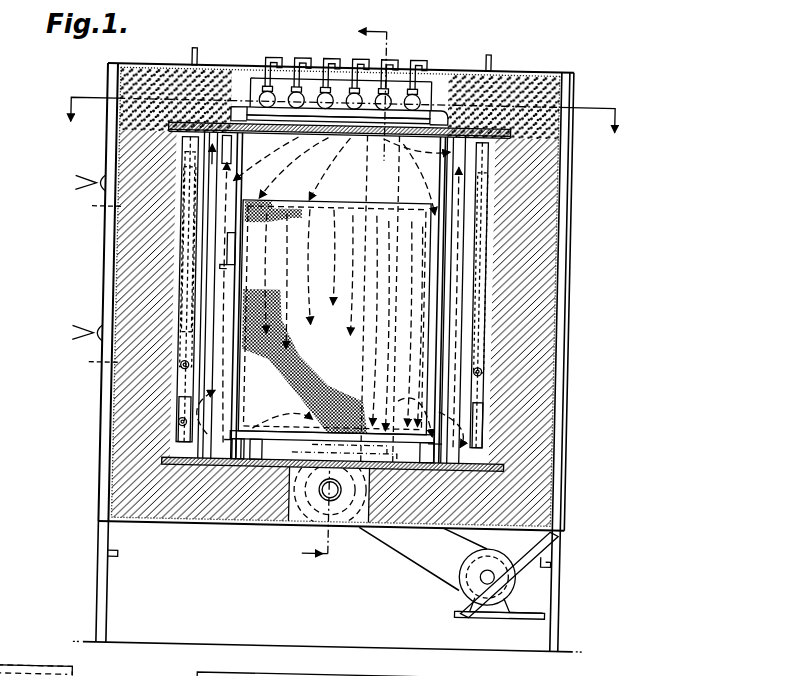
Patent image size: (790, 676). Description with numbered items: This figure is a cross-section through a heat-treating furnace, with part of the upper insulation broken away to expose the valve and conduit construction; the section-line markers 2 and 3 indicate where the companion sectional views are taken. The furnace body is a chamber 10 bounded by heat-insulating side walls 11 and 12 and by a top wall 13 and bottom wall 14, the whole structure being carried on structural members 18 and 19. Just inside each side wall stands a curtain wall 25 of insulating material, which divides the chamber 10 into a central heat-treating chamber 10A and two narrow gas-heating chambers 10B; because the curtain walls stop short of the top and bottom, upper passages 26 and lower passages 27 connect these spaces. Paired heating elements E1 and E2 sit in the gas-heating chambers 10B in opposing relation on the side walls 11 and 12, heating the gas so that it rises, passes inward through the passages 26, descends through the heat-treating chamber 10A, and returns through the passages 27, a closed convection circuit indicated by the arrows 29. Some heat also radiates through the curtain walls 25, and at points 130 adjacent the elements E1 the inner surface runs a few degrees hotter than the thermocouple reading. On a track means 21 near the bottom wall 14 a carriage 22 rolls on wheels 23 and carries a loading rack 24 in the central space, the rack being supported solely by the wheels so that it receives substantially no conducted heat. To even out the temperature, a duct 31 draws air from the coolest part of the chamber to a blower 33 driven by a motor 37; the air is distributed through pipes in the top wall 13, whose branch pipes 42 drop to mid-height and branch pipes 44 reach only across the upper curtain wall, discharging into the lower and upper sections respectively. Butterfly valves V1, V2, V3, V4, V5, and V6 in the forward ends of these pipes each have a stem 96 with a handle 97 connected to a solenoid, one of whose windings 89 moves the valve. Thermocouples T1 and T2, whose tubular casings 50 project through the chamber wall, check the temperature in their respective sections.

The section line 2- 2 is at (344, 300).
The section line 3- 3 is at (339, 112).
The chamber 10 is at (349, 158).
The heat-treating chamber 10A is at (444, 290).
The gas-heating chamber 10B is at (190, 373).
The side wall 11 is at (132, 270).
The side wall 12 is at (548, 271).
The top wall 13 is at (526, 90).
The bottom wall 14 is at (209, 491).
The structural member 18 is at (129, 553).
The structural member 19 is at (107, 552).
The track means 21 is at (265, 460).
The carriage 22 is at (183, 439).
The wheels 23 is at (245, 434).
The loading rack 24 is at (334, 317).
The curtain wall 25 is at (210, 231).
The upper passage 26 is at (206, 146).
The lower passage 27 is at (152, 474).
The arrows 29 is at (374, 163).
The duct 31 is at (340, 497).
The blower 33 is at (312, 496).
The motor 37 is at (527, 572).
The branch pipe 42 is at (481, 224).
The branch pipe 44 is at (456, 143).
The tubular casing 50 is at (94, 210).
The solenoid winding 89 is at (26, 672).
The stem 96 is at (262, 54).
The handle 97 is at (420, 55).
The points 130 is at (190, 418).
The heating element E1 is at (190, 404).
The heating element E2 is at (192, 300).
The thermocouple T1 is at (242, 330).
The thermocouple T2 is at (233, 167).
The butterfly valve V1 is at (388, 87).
The butterfly valve V2 is at (418, 90).
The butterfly valve V3 is at (358, 86).
The butterfly valve V4 is at (325, 86).
The butterfly valve V5 is at (261, 90).
The butterfly valve V6 is at (296, 86).